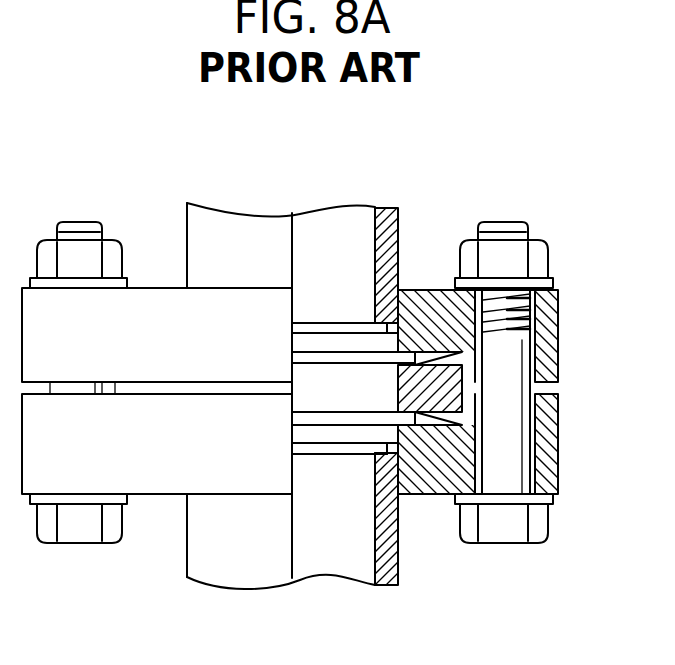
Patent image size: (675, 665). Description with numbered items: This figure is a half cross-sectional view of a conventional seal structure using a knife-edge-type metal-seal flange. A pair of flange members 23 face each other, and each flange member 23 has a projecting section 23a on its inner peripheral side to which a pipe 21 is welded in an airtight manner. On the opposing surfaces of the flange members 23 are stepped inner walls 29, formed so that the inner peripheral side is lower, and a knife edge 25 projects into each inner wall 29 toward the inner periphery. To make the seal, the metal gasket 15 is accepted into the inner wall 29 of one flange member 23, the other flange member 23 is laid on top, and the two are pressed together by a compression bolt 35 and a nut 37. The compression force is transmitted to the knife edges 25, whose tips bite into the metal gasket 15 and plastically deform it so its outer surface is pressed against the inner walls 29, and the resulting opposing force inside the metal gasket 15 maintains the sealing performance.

The metal gasket 15 is at (398, 390).
The pipe 21 is at (400, 222).
The flange member 23 is at (432, 290).
The projecting section 23a is at (378, 322).
The knife edge 25 is at (413, 357).
The inner wall 29 is at (460, 356).
The compression bolt 35 is at (537, 522).
The nut 37 is at (548, 255).